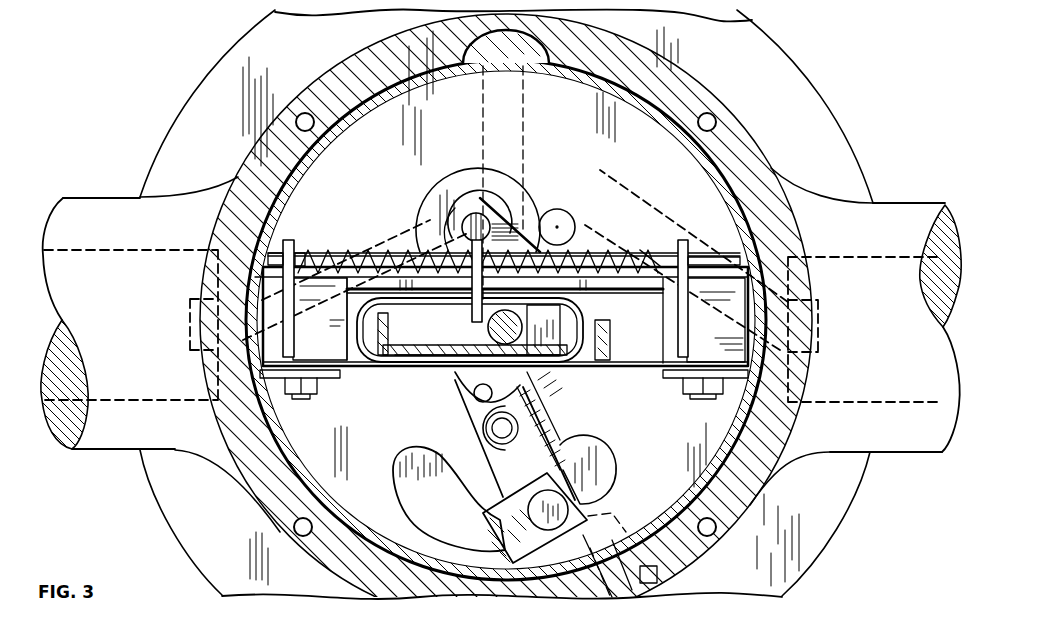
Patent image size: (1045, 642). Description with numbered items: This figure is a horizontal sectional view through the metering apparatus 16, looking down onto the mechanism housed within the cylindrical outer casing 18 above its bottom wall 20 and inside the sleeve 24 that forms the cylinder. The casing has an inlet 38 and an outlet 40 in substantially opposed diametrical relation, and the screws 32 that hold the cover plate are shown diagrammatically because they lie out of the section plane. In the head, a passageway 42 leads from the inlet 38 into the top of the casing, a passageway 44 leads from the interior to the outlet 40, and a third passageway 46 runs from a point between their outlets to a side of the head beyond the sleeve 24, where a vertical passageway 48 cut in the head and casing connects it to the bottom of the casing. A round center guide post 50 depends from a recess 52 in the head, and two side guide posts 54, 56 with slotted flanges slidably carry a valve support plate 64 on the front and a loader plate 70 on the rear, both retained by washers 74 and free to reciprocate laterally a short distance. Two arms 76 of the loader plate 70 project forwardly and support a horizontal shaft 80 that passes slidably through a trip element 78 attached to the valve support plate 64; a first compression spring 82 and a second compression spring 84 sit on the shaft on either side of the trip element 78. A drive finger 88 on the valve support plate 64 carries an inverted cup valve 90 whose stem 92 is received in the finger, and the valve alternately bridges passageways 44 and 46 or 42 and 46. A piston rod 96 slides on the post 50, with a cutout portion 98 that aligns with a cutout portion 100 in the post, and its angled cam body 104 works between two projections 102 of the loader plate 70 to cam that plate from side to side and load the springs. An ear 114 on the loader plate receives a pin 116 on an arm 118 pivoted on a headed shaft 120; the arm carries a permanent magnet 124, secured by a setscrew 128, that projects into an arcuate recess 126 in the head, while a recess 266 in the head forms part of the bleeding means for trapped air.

The metering apparatus 16 is at (842, 119).
The outer casing 18 is at (413, 46).
The bottom wall 20 is at (690, 588).
The sleeve 24 is at (584, 80).
The screws 32 is at (297, 115).
The inlet 38 is at (100, 437).
The outlet 40 is at (893, 438).
The passageway 42 is at (386, 232).
The passageway 44 is at (562, 220).
The third passageway 46 is at (529, 207).
The vertical passageway 48 is at (482, 50).
The center guide post 50 is at (490, 328).
The recess 52 is at (400, 338).
The guide post 54 is at (320, 319).
The guide post 56 is at (716, 320).
The valve support plate 64 is at (630, 280).
The loader plate 70 is at (626, 370).
The washers 74 is at (275, 388).
The arms 76 is at (289, 240).
The trip element 78 is at (470, 330).
The horizontal shaft 80 is at (702, 257).
The first compression spring 82 is at (357, 250).
The second compression spring 84 is at (642, 250).
The drive finger 88 is at (486, 210).
The cup valve 90 is at (460, 208).
The stem 92 is at (475, 213).
The piston rod 96 is at (490, 360).
The cutout portion 98 is at (543, 330).
The cutout portion 100 is at (472, 310).
The projections 102 is at (610, 336).
The cam body 104 is at (418, 356).
The ear 114 is at (462, 384).
The pin 116 is at (492, 393).
The arm 118 is at (515, 436).
The headed shaft 120 is at (486, 429).
The permanent magnet 124 is at (560, 545).
The arcuate recess 126 is at (612, 470).
The setscrew 128 is at (500, 546).
The recess 266 is at (626, 528).